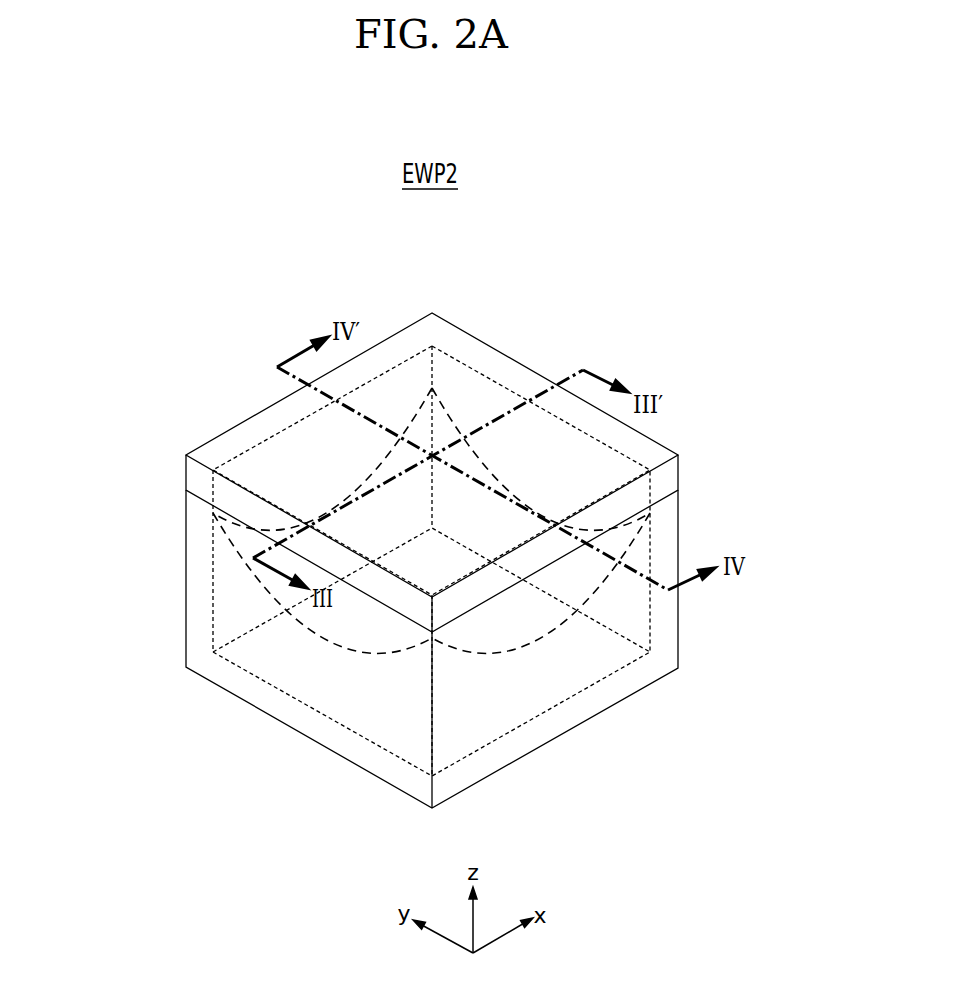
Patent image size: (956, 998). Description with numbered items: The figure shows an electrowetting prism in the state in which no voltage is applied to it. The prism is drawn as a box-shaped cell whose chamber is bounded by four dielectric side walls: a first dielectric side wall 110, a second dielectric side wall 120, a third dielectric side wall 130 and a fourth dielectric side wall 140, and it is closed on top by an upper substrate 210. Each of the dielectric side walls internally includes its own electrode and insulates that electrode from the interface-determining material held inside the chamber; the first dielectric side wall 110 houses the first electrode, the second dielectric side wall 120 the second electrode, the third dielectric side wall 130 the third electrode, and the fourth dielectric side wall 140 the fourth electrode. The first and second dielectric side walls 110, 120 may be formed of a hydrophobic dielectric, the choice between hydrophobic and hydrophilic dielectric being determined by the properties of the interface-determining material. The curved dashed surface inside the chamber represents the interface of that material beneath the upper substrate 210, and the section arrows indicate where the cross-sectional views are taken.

The first dielectric side wall 110 is at (352, 620).
The second dielectric side wall 120 is at (477, 398).
The third dielectric side wall 130 is at (290, 453).
The fourth dielectric side wall 140 is at (518, 623).
The upper substrate 210 is at (415, 333).